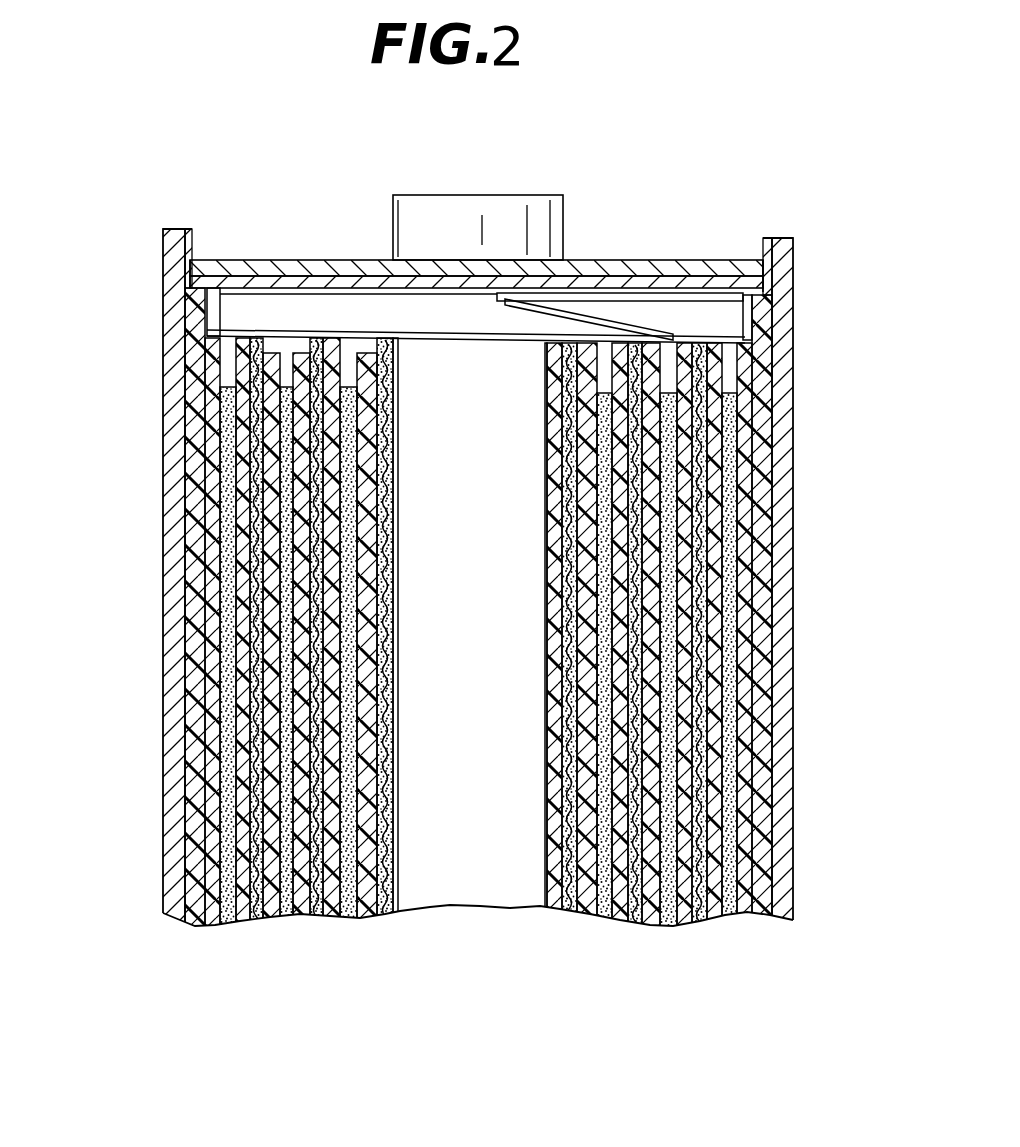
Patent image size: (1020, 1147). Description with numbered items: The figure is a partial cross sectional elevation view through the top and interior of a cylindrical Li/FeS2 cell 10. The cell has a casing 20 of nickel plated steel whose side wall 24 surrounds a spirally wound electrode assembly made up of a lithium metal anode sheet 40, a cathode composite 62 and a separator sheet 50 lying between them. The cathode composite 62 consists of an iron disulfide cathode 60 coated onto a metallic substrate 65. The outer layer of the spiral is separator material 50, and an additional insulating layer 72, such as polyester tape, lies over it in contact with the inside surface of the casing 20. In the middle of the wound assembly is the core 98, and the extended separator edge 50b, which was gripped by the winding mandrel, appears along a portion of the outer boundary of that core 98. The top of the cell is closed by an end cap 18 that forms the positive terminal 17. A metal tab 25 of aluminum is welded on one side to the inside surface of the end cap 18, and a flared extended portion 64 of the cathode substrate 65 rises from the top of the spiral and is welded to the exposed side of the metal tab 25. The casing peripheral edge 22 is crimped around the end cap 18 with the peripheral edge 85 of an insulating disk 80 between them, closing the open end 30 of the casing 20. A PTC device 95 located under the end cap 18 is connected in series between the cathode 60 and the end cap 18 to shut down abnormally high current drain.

The cylindrical cell 10 is at (806, 350).
The positive terminal 17 is at (485, 195).
The end cap 18 is at (318, 262).
The casing 20 is at (168, 330).
The casing peripheral edge 22 is at (170, 236).
The casing side wall 24 is at (165, 830).
The metal tab 25 is at (667, 330).
The open end 30 is at (193, 257).
The anode sheet 40 is at (228, 493).
The separator sheet 50 is at (240, 553).
The extended separator edge 50b is at (525, 908).
The cathode 60 is at (707, 623).
The cathode composite 62 is at (245, 655).
The extended portion 64 is at (723, 343).
The metallic substrate 65 is at (700, 648).
The insulating layer 72 is at (197, 435).
The insulating disk 80 is at (765, 290).
The peripheral edge of insulating disk 85 is at (193, 258).
The PTC device 95 is at (660, 297).
The core 98 is at (447, 906).